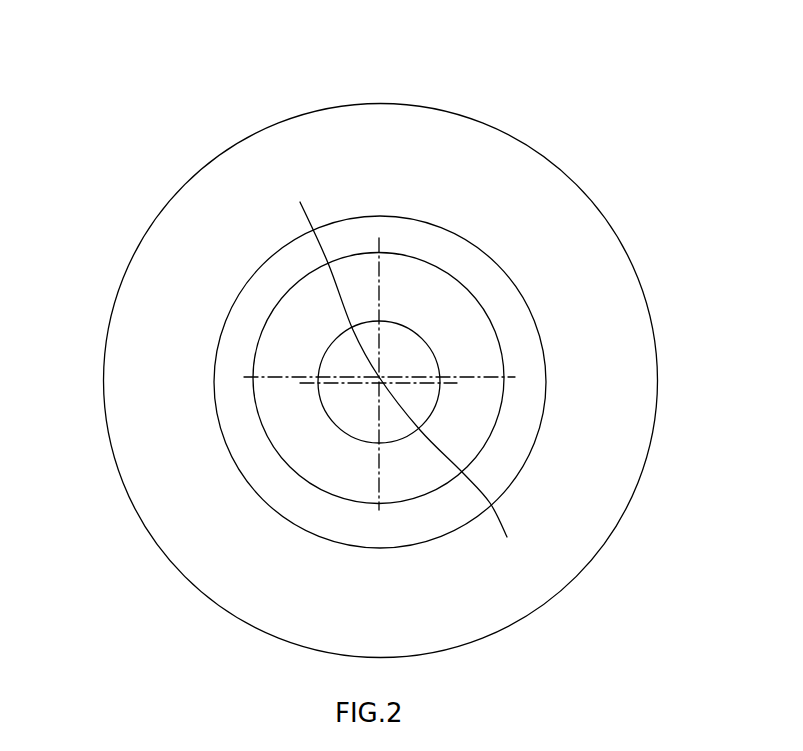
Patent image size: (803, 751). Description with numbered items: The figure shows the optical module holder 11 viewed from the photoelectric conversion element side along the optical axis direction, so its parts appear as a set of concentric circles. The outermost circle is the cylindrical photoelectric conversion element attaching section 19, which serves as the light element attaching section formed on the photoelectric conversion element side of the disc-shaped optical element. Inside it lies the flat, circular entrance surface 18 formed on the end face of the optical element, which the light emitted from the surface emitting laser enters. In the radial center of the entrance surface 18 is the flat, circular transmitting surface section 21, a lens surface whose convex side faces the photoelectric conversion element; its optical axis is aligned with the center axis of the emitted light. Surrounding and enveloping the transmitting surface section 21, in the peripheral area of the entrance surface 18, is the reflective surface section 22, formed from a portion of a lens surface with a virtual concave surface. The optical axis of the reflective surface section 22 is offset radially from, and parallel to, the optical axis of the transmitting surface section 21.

The optical module holder 11 is at (112, 112).
The entrance surface 18 is at (442, 225).
The photoelectric conversion element attaching section 19 is at (307, 113).
The transmitting surface section 21 is at (325, 358).
The reflective surface section 22 is at (482, 303).